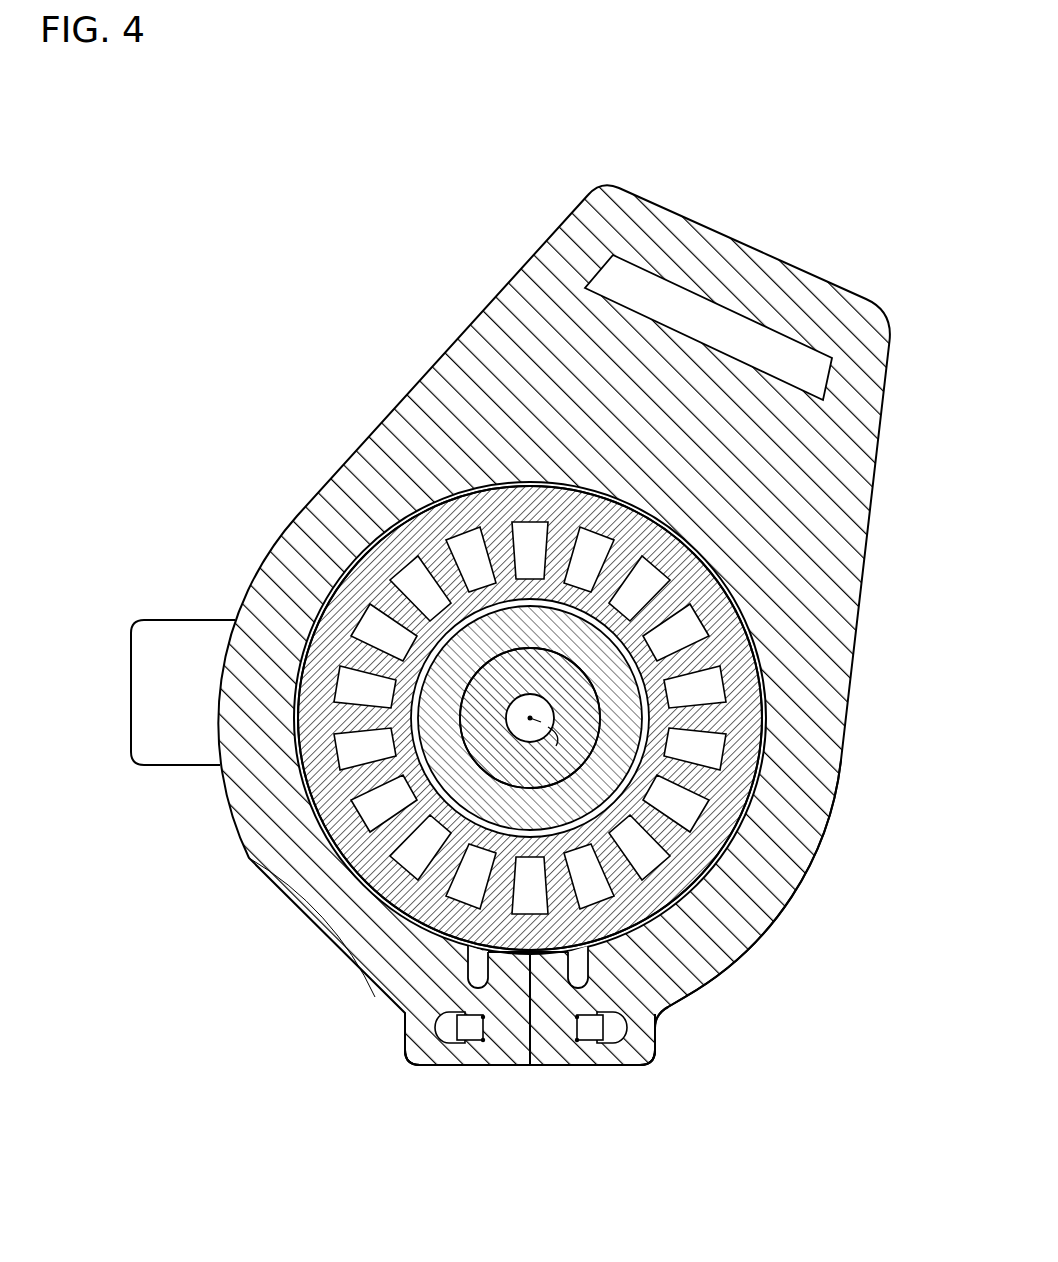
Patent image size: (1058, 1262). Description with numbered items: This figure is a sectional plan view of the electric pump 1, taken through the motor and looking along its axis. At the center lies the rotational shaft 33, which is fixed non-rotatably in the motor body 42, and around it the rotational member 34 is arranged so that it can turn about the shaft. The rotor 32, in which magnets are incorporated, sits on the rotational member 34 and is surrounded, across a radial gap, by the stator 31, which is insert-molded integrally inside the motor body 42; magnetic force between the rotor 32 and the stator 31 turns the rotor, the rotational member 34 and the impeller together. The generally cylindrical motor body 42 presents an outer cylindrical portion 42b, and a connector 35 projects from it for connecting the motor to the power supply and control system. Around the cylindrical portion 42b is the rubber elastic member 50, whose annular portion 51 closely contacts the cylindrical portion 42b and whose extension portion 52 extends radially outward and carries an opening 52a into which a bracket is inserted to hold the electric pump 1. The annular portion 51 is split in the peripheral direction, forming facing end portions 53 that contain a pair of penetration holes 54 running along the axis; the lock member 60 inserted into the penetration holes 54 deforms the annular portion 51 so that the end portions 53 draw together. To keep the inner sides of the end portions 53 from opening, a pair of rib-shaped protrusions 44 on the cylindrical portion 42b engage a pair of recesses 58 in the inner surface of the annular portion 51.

The electric pump 1 is at (252, 207).
The stator 31 is at (400, 857).
The rotor 32 is at (440, 737).
The rotational shaft 33 is at (507, 714).
The rotational member 34 is at (583, 748).
The connector 35 is at (190, 630).
The motor body 42 is at (519, 660).
The cylindrical portion 42b is at (348, 548).
The protrusions 44 is at (566, 1000).
The elastic member 50 is at (588, 684).
The annular portion 51 is at (849, 690).
The extension portion 52 is at (877, 445).
The opening 52a is at (714, 308).
The end portions 53 is at (490, 1068).
The penetration holes 54 is at (405, 1058).
The recesses 58 is at (480, 984).
The lock member 60 is at (630, 1030).